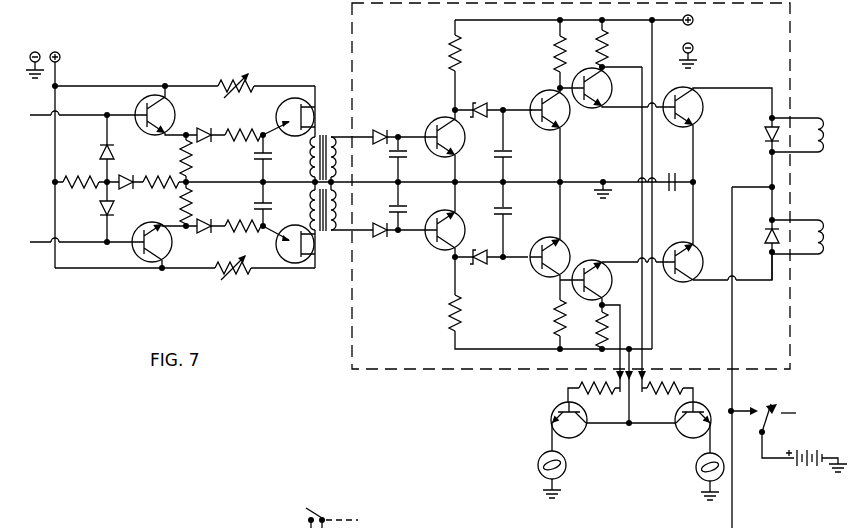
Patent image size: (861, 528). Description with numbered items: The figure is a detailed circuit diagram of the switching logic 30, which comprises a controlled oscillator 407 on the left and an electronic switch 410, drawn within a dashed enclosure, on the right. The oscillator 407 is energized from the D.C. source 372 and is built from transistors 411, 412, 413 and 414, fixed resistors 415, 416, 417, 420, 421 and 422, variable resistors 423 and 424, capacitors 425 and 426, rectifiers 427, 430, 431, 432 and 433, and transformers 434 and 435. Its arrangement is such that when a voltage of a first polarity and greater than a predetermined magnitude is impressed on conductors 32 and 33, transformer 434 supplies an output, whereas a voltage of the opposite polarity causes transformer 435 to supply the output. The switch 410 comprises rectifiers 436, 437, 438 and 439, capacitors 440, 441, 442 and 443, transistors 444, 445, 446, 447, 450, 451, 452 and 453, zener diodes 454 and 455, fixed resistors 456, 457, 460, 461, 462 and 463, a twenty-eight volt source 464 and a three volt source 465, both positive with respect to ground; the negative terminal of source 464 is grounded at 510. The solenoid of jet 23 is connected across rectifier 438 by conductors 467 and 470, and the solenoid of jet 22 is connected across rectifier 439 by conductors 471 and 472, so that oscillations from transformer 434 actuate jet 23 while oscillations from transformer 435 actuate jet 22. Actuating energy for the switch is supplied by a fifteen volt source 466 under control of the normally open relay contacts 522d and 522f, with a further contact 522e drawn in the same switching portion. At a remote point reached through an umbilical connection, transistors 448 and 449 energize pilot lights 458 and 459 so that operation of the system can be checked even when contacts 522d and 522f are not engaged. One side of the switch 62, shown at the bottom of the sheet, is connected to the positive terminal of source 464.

The D.C. source 372 is at (50, 49).
The conductor 32 is at (40, 114).
The conductor 33 is at (40, 241).
The switching logic 30 is at (331, 38).
The controlled oscillator 407 is at (210, 78).
The transistor 411 is at (141, 103).
The transistor 412 is at (141, 258).
The transistor 413 is at (279, 100).
The transistor 414 is at (279, 252).
The fixed resistor 415 is at (81, 195).
The fixed resistor 416 is at (418, 195).
The fixed resistor 417 is at (190, 162).
The fixed resistor 420 is at (205, 205).
The fixed resistor 421 is at (245, 126).
The fixed resistor 422 is at (245, 236).
The variable resistor 423 is at (252, 80).
The variable resistor 424 is at (235, 279).
The capacitor 425 is at (267, 154).
The capacitor 426 is at (268, 203).
The rectifier 427 is at (100, 153).
The rectifier 430 is at (98, 214).
The rectifier 431 is at (130, 176).
The rectifier 432 is at (207, 127).
The rectifier 433 is at (207, 237).
The transformer 434 is at (330, 122).
The transformer 435 is at (330, 256).
The electronic switch 410 is at (793, 9).
The rectifier 436 is at (379, 130).
The rectifier 437 is at (379, 240).
The capacitor 440 is at (394, 153).
The capacitor 441 is at (394, 208).
The capacitor 442 is at (510, 157).
The capacitor 443 is at (510, 213).
The transistor 444 is at (448, 112).
The transistor 445 is at (538, 102).
The transistor 446 is at (597, 109).
The transistor 447 is at (678, 126).
The transistor 450 is at (438, 248).
The transistor 451 is at (536, 275).
The transistor 452 is at (575, 269).
The transistor 453 is at (682, 284).
The zener diode 454 is at (488, 94).
The zener diode 455 is at (478, 266).
The fixed resistor 456 is at (453, 44).
The fixed resistor 457 is at (557, 54).
The fixed resistor 460 is at (601, 47).
The fixed resistor 461 is at (450, 325).
The fixed resistor 462 is at (555, 318).
The fixed resistor 463 is at (600, 336).
The 28-volt source 464 is at (695, 45).
The three volt source 465 is at (675, 195).
The ground 510 is at (678, 94).
The rectifier 438 is at (765, 135).
The rectifier 439 is at (762, 248).
The conductor 467 is at (818, 118).
The conductor 470 is at (818, 153).
The conductor 471 is at (818, 221).
The conductor 472 is at (818, 255).
The jet 23 is at (814, 135).
The jet 22 is at (811, 237).
The transistor 448 is at (556, 411).
The transistor 449 is at (713, 396).
The pilot light 458 is at (538, 466).
The pilot light 459 is at (695, 470).
The 15 volt source 466 is at (804, 463).
The relay contact 522d is at (776, 404).
The switch contact 522e is at (789, 414).
The relay contact 522f is at (745, 408).
The switch 62 is at (332, 511).